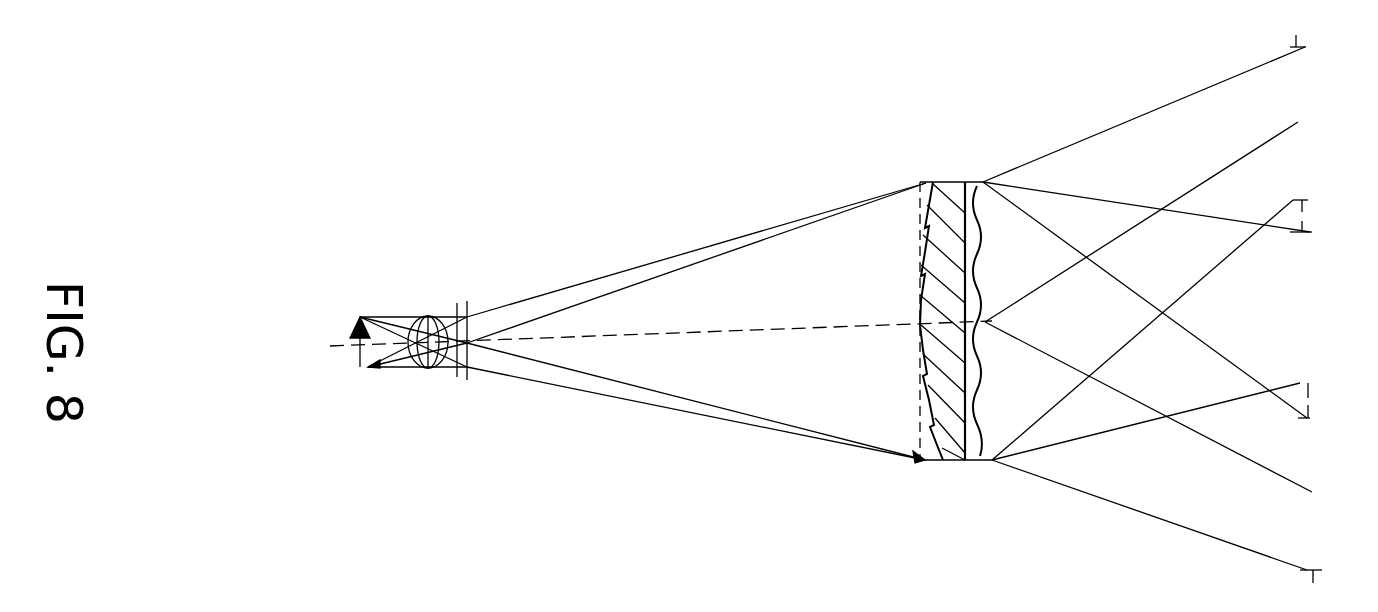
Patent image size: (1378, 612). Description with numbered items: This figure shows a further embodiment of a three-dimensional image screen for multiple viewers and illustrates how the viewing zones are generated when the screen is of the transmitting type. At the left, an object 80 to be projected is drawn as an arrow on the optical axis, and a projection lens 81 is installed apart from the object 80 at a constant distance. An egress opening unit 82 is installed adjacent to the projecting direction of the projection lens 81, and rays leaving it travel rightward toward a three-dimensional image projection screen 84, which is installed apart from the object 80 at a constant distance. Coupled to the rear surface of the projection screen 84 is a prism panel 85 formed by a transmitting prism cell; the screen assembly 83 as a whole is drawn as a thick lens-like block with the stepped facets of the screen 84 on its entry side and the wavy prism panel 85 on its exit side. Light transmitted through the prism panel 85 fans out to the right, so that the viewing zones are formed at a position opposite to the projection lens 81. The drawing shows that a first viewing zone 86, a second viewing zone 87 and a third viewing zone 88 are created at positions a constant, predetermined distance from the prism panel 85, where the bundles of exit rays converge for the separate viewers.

The object 80 is at (355, 318).
The projection lens 81 is at (425, 316).
The egress opening unit 82 is at (460, 303).
The Fresnel lens 83 is at (932, 269).
The 3-dimentional image projection screen 84 is at (918, 247).
The prism panel 85 is at (970, 182).
The first viewing zone 86 is at (1160, 178).
The second viewing zone 87 is at (1167, 321).
The third viewing zone 88 is at (1168, 452).